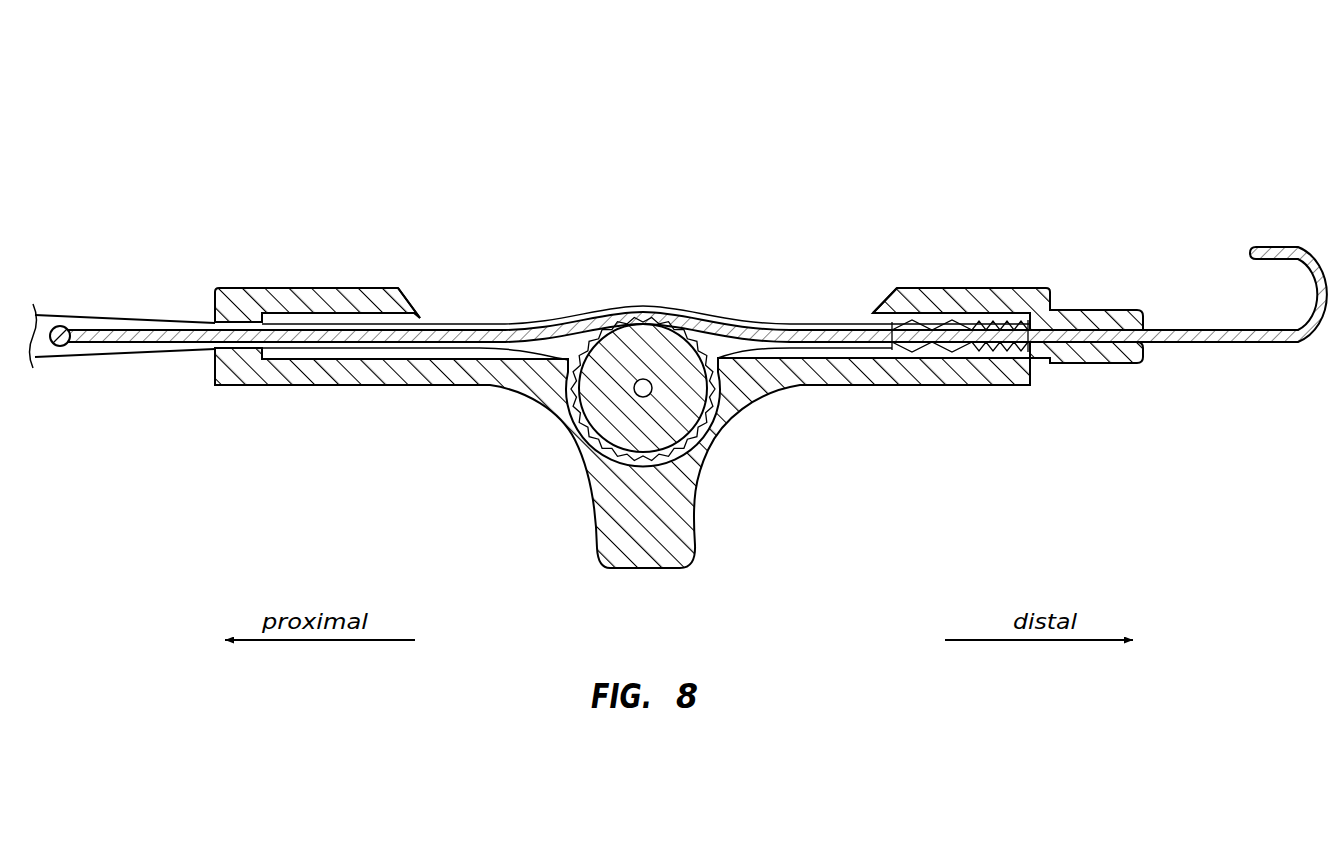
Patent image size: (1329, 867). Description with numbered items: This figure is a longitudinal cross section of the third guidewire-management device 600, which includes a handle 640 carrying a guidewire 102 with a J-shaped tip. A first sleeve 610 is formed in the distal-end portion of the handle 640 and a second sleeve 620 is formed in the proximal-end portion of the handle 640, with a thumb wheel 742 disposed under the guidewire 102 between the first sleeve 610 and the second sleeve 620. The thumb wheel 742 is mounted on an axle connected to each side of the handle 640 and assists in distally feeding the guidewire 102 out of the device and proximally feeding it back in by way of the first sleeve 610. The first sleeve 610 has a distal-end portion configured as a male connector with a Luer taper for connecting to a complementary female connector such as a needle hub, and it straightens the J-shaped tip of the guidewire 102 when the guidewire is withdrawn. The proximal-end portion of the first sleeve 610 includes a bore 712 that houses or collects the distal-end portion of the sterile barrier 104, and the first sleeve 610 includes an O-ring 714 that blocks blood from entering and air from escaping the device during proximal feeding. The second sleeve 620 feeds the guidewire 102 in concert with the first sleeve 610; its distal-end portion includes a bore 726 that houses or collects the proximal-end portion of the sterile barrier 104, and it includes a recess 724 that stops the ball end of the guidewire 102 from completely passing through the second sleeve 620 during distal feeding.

The third guidewire-management device 600 is at (902, 170).
The guidewire 102 is at (121, 328).
The sterile barrier 104 is at (720, 323).
The first sleeve 610 is at (973, 282).
The second sleeve 620 is at (305, 262).
The handle 640 is at (732, 532).
The bore 712 is at (861, 315).
The O-ring 714 is at (1025, 347).
The recess 724 is at (203, 357).
The bore 726 is at (427, 314).
The thumb wheel 742 is at (603, 408).